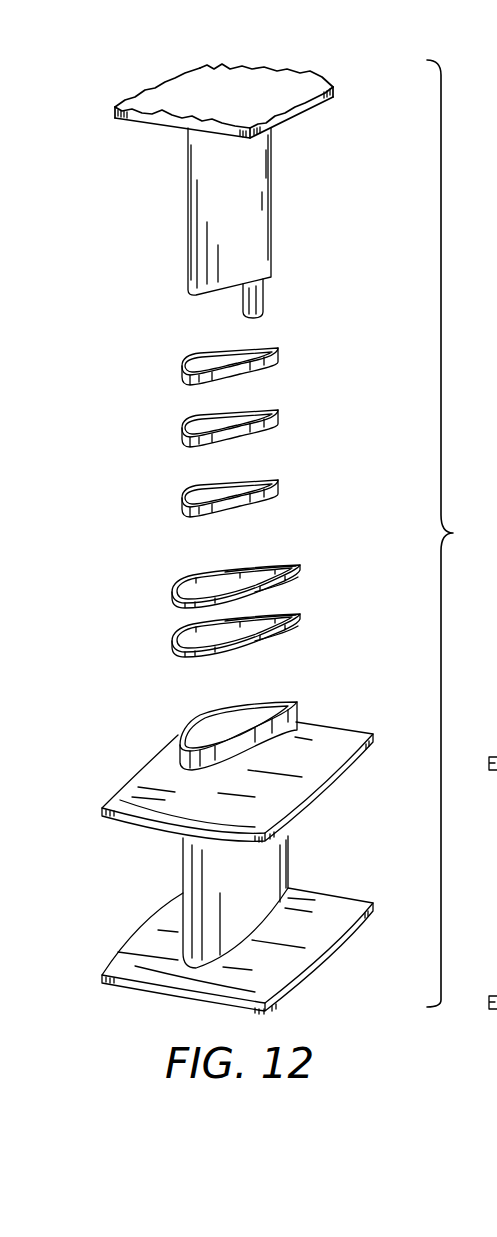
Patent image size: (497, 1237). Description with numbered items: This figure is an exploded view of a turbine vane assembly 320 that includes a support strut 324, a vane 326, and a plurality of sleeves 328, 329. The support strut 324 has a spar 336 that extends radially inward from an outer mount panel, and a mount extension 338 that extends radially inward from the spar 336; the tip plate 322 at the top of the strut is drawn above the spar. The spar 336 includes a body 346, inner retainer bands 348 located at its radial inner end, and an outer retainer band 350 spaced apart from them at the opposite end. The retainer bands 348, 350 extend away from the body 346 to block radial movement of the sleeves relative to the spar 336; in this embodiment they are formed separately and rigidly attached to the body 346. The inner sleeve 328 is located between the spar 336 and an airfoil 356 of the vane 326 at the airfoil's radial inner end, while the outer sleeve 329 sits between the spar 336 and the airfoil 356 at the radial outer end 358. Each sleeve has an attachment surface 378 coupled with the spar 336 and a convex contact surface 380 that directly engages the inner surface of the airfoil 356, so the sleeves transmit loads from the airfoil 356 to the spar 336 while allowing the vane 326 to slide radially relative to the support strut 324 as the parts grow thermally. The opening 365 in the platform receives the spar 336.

The turbine vane assembly 320 is at (125, 65).
The tip plate 322 is at (312, 108).
The support strut 324 is at (133, 180).
The vane 326 is at (135, 903).
The inner sleeve 328 is at (163, 653).
The outer sleeve 329 is at (163, 598).
The spar 336 is at (182, 220).
The mount extension 338 is at (270, 307).
The body 346 is at (270, 223).
The inner retainer bands 348 is at (182, 505).
The outer retainer band 350 is at (182, 373).
The airfoil 356 is at (183, 863).
The radial outer end 358 is at (177, 752).
The opening boss 365 is at (207, 723).
The attachment surface 378 is at (246, 572).
The contact surface 380 is at (278, 583).